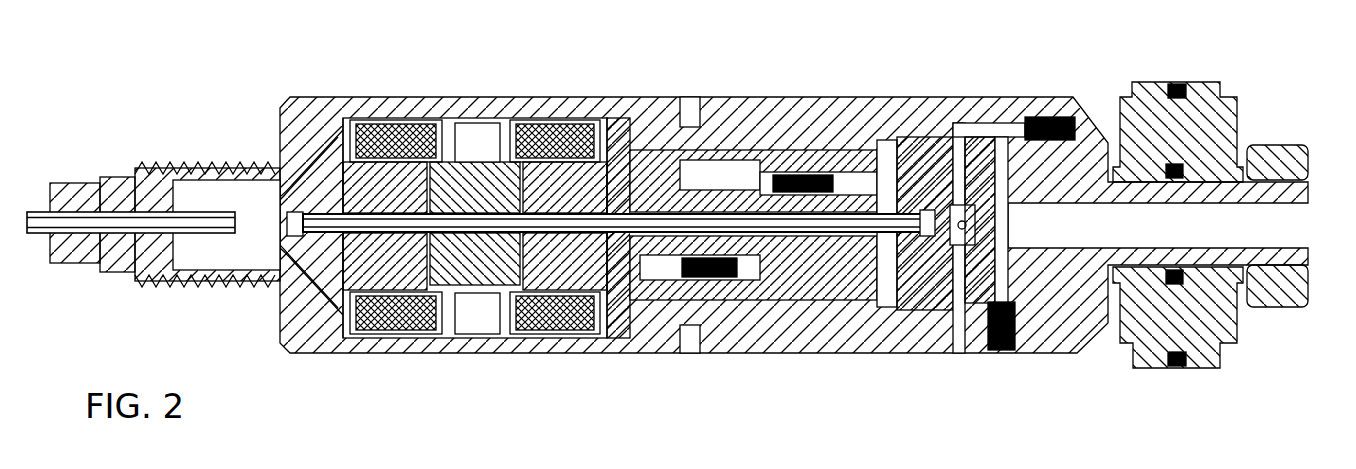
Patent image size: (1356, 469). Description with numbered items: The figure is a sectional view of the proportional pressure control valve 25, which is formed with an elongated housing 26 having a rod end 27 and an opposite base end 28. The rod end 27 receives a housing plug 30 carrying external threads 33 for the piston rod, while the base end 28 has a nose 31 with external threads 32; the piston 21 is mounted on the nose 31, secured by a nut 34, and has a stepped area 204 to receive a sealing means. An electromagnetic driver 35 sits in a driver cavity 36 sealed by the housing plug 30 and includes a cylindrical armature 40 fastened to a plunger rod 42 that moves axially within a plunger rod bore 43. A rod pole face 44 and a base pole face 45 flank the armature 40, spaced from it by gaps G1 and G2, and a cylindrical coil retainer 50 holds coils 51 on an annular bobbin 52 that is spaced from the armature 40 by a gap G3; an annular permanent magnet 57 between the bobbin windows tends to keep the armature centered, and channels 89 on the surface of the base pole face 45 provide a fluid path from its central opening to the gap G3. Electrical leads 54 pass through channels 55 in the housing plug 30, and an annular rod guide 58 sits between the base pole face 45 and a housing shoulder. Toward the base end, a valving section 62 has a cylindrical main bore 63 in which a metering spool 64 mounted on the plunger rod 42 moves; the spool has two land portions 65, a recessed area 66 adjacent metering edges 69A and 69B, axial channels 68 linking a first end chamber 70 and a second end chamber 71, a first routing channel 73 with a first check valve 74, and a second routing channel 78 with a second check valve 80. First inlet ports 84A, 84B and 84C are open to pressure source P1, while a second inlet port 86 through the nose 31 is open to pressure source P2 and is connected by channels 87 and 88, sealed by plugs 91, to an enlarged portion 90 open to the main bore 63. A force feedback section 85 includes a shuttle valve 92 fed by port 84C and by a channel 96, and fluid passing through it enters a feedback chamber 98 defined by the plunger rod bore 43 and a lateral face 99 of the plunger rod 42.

The piston 21 is at (1240, 340).
The pressure control valve 25 is at (268, 106).
The housing 26 is at (300, 97).
The rod end 27 is at (268, 131).
The base end 28 is at (1296, 122).
The housing plug 30 is at (163, 290).
The nose 31 is at (1262, 303).
The external threads 32 is at (1262, 310).
The external threads 33 is at (223, 287).
The nut 34 is at (1243, 330).
The electromagnetic driver 35 is at (481, 96).
The driver cavity 36 is at (500, 120).
The armature 40 is at (482, 285).
The plunger rod 42 is at (275, 245).
The plunger rod bore 43 is at (262, 190).
The rod pole face 44 is at (325, 130).
The base pole face 45 is at (556, 140).
The coil retainer 50 is at (372, 138).
The coils 51 is at (400, 128).
The bobbin 52 is at (395, 320).
The electrical leads 54 is at (63, 210).
The channels 55 is at (255, 185).
The permanent magnet 57 is at (468, 118).
The rod guide 58 is at (614, 130).
The valving section 62 is at (833, 66).
The main bore 63 is at (752, 150).
The metering spool 64 is at (835, 165).
The land portions 65 is at (665, 330).
The recessed area 66 is at (745, 160).
The axial channels 68 is at (622, 150).
The metering edge 69A is at (720, 320).
The metering edge 69B is at (820, 353).
The first end chamber 70 is at (610, 353).
The second end chamber 71 is at (887, 307).
The first routing channel 73 is at (720, 145).
The first check valve 74 is at (800, 175).
The second routing channel 78 is at (760, 353).
The second check valve 80 is at (625, 325).
The first inlet port 84A is at (690, 115).
The first inlet port 84B is at (703, 353).
The first inlet port 84C is at (973, 353).
The force feedback section 85 is at (973, 92).
The second inlet port 86 is at (1308, 203).
The channel 87 is at (1001, 137).
The channel 88 is at (880, 140).
The channels 89 is at (521, 233).
The enlarged portion 90 is at (780, 145).
The plugs 91 is at (1046, 117).
The shuttle valve 92 is at (989, 241).
The channel 96 is at (958, 140).
The feedback chamber 98 is at (961, 318).
The lateral face 99 is at (942, 248).
The stepped area 204 is at (1205, 82).
The gap G1 is at (428, 300).
The gap G2 is at (522, 300).
The gap G3 is at (440, 120).
The pressure source P1 is at (692, 66).
The pressure source P2 is at (1262, 227).